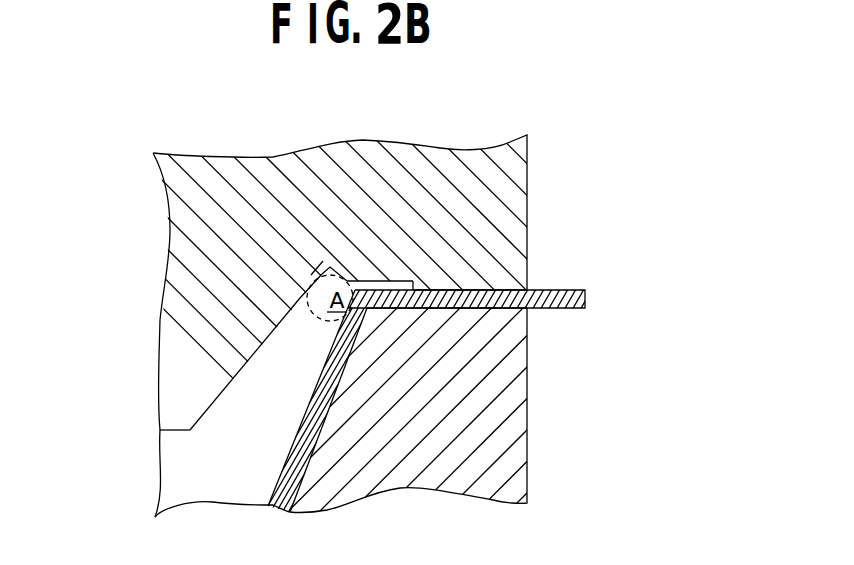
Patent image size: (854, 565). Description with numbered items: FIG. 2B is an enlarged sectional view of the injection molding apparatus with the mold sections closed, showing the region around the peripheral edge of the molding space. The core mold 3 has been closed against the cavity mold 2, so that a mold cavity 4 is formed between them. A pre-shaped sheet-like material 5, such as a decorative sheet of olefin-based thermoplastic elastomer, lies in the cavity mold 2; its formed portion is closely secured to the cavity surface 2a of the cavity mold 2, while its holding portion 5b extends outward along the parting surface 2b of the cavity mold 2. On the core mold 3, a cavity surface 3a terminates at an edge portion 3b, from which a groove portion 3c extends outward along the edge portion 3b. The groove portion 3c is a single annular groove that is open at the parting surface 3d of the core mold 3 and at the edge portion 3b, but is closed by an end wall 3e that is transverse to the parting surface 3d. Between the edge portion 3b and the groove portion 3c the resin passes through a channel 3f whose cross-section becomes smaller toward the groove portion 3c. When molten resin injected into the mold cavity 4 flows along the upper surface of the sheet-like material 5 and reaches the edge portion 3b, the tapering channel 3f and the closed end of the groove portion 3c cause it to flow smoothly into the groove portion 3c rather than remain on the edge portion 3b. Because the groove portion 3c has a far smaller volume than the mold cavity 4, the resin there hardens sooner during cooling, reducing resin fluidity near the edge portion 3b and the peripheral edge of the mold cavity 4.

The cavity mold 2 is at (440, 412).
The cavity surface 2a is at (323, 437).
The parting surface 2b is at (509, 318).
The core mold 3 is at (229, 238).
The cavity surface 3a is at (221, 402).
The edge portion 3b is at (305, 310).
The groove portion 3c is at (387, 287).
The parting surface 3d is at (480, 288).
The end wall 3e is at (417, 286).
The channel 3f is at (312, 268).
The mold cavity 4 is at (180, 468).
The sheet-like material 5 is at (274, 477).
The holding portion 5b is at (585, 299).